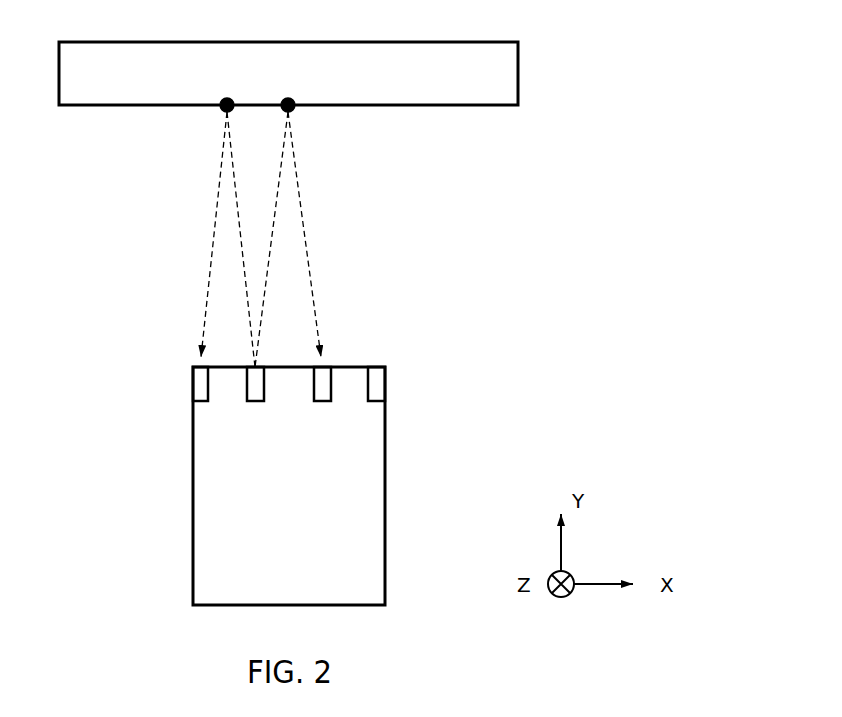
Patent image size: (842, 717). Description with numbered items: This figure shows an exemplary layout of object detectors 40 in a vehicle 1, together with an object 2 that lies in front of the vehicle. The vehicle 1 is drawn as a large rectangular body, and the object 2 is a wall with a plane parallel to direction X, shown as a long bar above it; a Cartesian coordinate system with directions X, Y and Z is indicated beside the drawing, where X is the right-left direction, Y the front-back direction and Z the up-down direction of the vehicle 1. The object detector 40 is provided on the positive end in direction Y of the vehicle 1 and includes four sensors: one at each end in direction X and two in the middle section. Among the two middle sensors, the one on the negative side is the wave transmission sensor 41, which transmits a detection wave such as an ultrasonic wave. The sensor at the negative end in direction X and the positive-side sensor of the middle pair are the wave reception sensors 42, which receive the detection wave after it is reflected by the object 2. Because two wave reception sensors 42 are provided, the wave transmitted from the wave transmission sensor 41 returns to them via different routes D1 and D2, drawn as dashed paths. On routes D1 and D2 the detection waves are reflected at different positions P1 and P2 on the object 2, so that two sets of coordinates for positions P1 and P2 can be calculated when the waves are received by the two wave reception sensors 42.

The vehicle 1 is at (190, 502).
The object 2 is at (518, 66).
The object detector 40 is at (272, 414).
The wave transmission sensor 41 is at (258, 377).
The wave reception sensor 42 is at (191, 383).
The position P1 is at (221, 108).
The position P2 is at (295, 108).
The route D1 is at (216, 217).
The route D2 is at (308, 257).